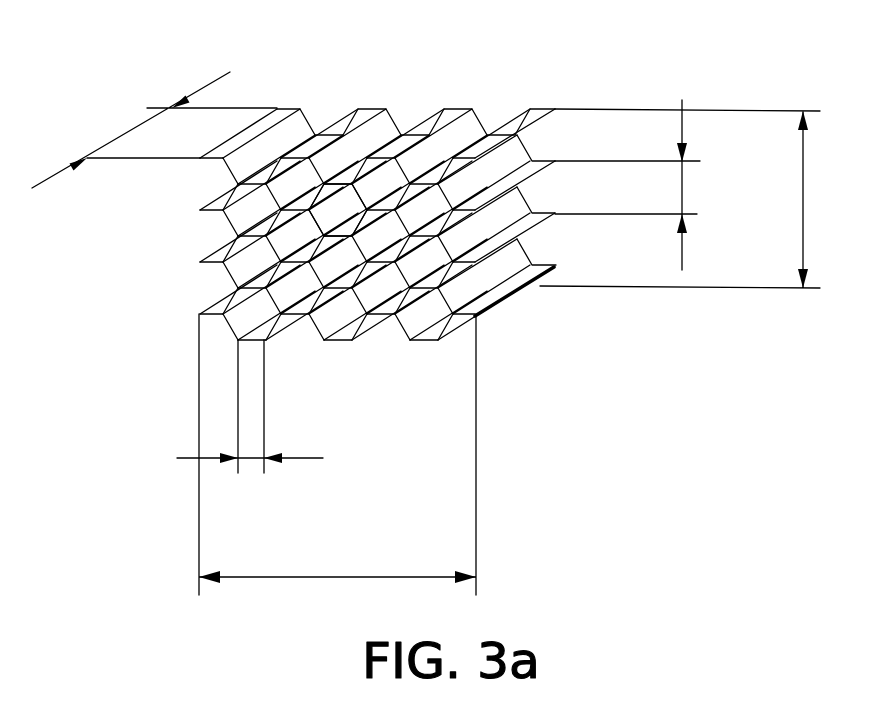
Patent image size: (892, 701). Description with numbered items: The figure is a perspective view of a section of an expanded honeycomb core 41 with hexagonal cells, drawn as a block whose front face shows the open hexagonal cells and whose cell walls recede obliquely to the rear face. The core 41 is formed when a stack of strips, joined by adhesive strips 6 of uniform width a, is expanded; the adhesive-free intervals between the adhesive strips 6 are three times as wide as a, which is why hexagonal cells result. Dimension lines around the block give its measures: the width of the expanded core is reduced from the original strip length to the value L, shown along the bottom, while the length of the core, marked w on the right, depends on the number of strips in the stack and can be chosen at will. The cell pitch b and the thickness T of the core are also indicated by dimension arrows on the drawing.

The honeycomb core 41 is at (458, 69).
The adhesive strips 6 is at (385, 207).
The core thickness T is at (154, 130).
The length of the honeycomb core w is at (680, 198).
The cell height b is at (627, 185).
The width of the adhesive strips a is at (250, 406).
The width of the expanded honeycomb core L is at (337, 454).